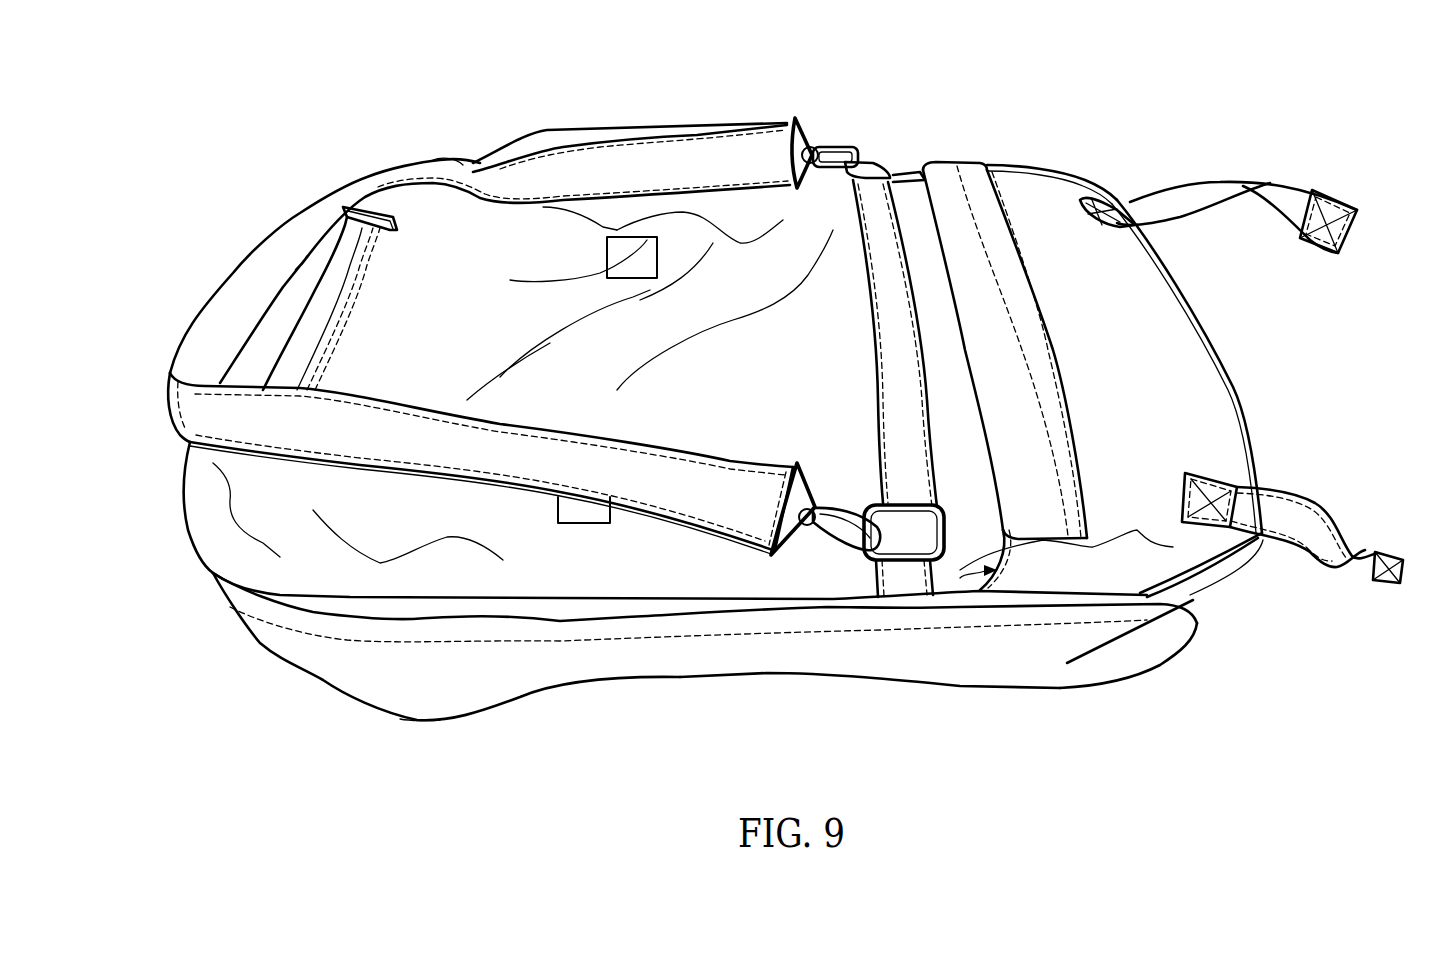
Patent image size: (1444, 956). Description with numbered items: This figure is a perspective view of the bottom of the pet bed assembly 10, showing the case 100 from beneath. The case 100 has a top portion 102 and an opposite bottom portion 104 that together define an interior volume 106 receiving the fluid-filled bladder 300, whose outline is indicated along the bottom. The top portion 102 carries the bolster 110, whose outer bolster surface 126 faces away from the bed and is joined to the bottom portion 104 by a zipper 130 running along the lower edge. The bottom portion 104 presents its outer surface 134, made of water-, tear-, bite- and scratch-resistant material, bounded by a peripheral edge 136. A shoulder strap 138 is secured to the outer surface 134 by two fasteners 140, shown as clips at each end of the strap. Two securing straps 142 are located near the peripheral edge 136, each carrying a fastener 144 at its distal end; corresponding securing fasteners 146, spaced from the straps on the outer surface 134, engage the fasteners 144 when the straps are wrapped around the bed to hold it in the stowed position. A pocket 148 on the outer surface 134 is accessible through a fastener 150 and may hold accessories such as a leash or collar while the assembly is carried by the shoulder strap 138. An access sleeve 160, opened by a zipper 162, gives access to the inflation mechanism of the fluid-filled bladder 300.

The bed assembly 10 is at (1102, 97).
The case 100 is at (818, 100).
The top portion 102 is at (1186, 653).
The bottom portion 104 is at (1156, 345).
The interior volume 106 is at (333, 668).
The bolster 110 is at (1037, 684).
The outer bolster surface 126 is at (1103, 663).
The zipper 130 is at (1147, 613).
The outer surface 134 is at (260, 527).
The peripheral edge 136 is at (293, 602).
The shoulder strap 138 is at (197, 407).
The fastener 140 is at (843, 145).
The securing strap 142 is at (1240, 185).
The fastener 144 is at (1330, 250).
The securing fastener 146 is at (630, 237).
The pocket 148 is at (933, 593).
The fastener 150 is at (1033, 313).
The access sleeve 160 is at (335, 303).
The zipper 162 is at (318, 350).
The fluid-filled bladder 300 is at (420, 715).